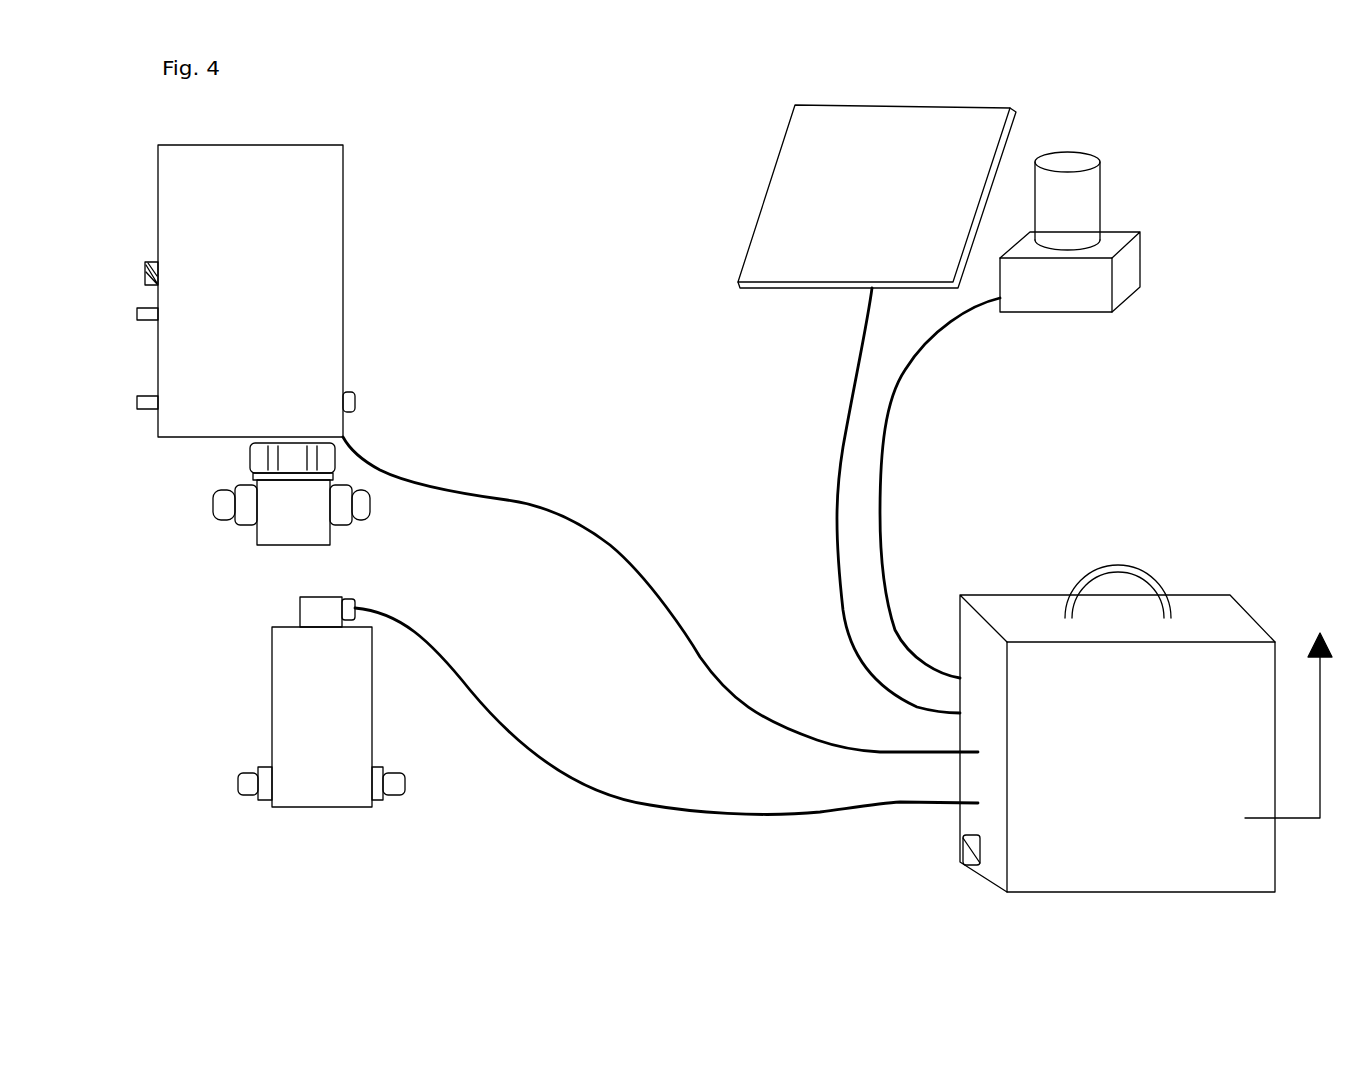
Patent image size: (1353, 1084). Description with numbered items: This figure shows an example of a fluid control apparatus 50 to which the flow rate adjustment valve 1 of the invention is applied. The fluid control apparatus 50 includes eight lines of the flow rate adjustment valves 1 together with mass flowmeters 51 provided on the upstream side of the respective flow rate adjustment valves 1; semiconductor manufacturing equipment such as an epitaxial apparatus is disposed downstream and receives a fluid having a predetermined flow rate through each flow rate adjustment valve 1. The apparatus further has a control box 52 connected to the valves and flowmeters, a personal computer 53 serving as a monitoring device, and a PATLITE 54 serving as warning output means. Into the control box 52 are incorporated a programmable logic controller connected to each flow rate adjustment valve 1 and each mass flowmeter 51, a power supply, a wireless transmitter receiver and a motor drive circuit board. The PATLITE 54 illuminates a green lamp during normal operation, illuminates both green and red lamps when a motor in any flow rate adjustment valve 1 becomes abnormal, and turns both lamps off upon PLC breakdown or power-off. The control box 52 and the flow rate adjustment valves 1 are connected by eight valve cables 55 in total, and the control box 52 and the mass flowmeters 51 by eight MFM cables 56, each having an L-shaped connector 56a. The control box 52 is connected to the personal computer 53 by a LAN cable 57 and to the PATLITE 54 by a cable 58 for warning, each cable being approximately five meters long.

The flow rate adjustment valve 1 is at (343, 185).
The fluid control apparatus 50 is at (1230, 417).
The mass flowmeter 51 is at (272, 716).
The control box 52 is at (1148, 892).
The personal computer 53 is at (905, 105).
The PATLITE 54 is at (1140, 248).
The valve cable 55 is at (623, 557).
The MFM cable 56 is at (666, 812).
The L-shaped connector 56a is at (323, 597).
The LAN cable 57 is at (840, 460).
The cable for warning 58 is at (895, 400).